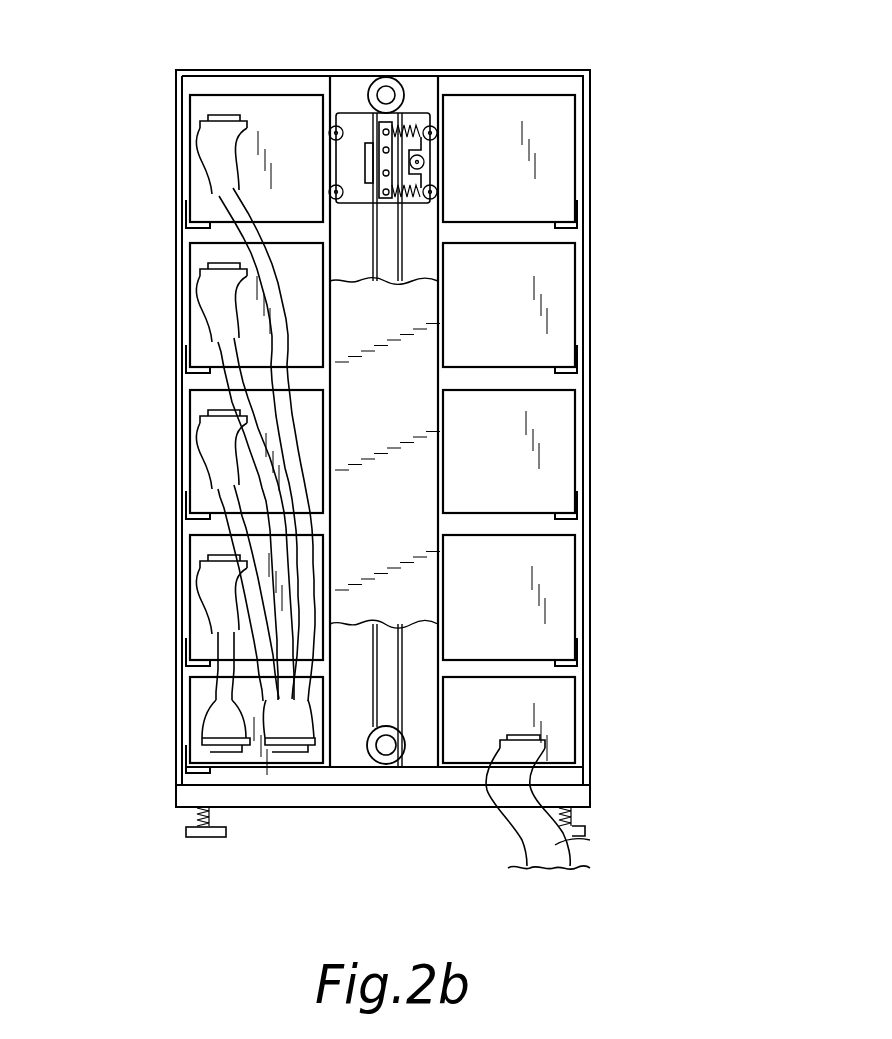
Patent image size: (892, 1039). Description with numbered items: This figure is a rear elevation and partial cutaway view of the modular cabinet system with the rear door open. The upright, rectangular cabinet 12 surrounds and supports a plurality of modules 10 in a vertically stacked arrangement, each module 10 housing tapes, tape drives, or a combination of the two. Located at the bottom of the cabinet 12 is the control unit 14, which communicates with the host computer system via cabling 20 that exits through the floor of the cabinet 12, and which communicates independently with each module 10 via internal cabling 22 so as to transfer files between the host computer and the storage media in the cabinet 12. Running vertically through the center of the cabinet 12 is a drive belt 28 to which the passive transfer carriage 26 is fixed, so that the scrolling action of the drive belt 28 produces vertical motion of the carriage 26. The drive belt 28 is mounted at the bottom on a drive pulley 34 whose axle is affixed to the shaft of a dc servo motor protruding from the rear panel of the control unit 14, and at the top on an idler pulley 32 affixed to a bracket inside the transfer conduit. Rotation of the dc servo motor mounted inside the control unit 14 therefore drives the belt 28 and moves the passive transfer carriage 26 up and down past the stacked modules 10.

The module 10 is at (560, 598).
The cabinet 12 is at (598, 232).
The control unit 14 is at (555, 716).
The cabling 20 is at (547, 851).
The internal cabling 22 is at (300, 527).
The passive transfer carriage 26 is at (352, 125).
The drive belt 28 is at (402, 697).
The idler pulley 32 is at (405, 93).
The bottom drive pulley 34 is at (385, 760).